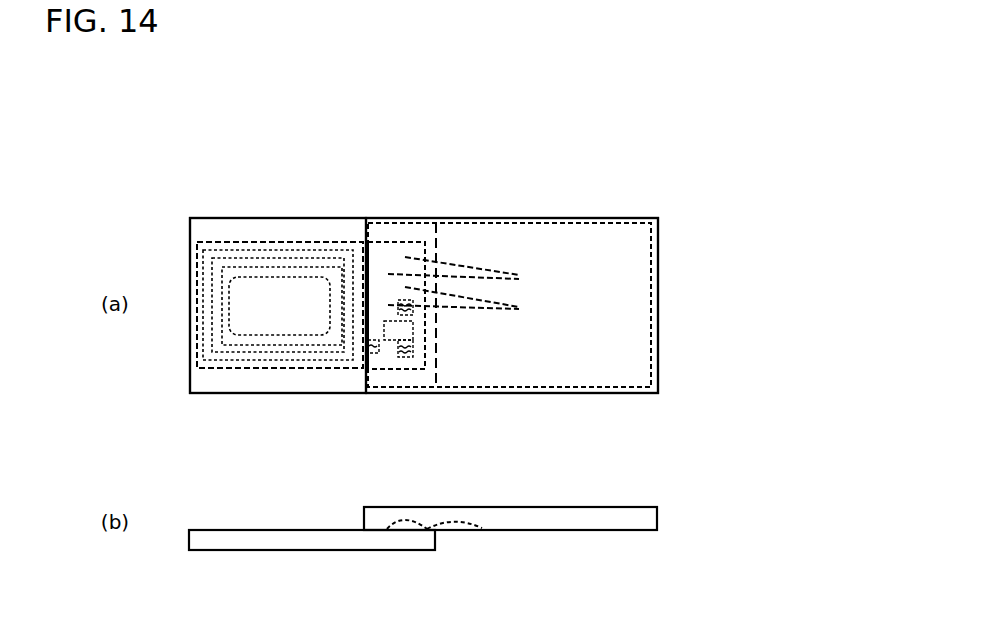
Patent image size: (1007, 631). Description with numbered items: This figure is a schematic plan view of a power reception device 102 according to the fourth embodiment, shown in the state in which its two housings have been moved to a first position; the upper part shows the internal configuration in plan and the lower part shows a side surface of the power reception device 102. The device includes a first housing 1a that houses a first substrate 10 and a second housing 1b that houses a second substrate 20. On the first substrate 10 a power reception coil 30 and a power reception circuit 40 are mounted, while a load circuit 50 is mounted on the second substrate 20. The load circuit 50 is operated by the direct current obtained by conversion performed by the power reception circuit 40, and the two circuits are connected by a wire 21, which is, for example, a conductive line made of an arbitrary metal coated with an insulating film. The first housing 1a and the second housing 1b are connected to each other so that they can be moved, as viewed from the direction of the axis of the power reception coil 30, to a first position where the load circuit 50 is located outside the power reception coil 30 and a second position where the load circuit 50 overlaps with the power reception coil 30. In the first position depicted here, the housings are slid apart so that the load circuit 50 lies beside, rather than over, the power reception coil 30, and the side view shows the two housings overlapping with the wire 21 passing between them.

The power reception device 102 is at (662, 195).
The first housing 1a is at (254, 218).
The second housing 1b is at (578, 218).
The first substrate 10 is at (312, 242).
The power reception coil 30 is at (253, 368).
The second substrate 20 is at (623, 223).
The wire 21 is at (519, 308).
The power reception circuit 40 is at (407, 357).
The load circuit 50 is at (523, 357).